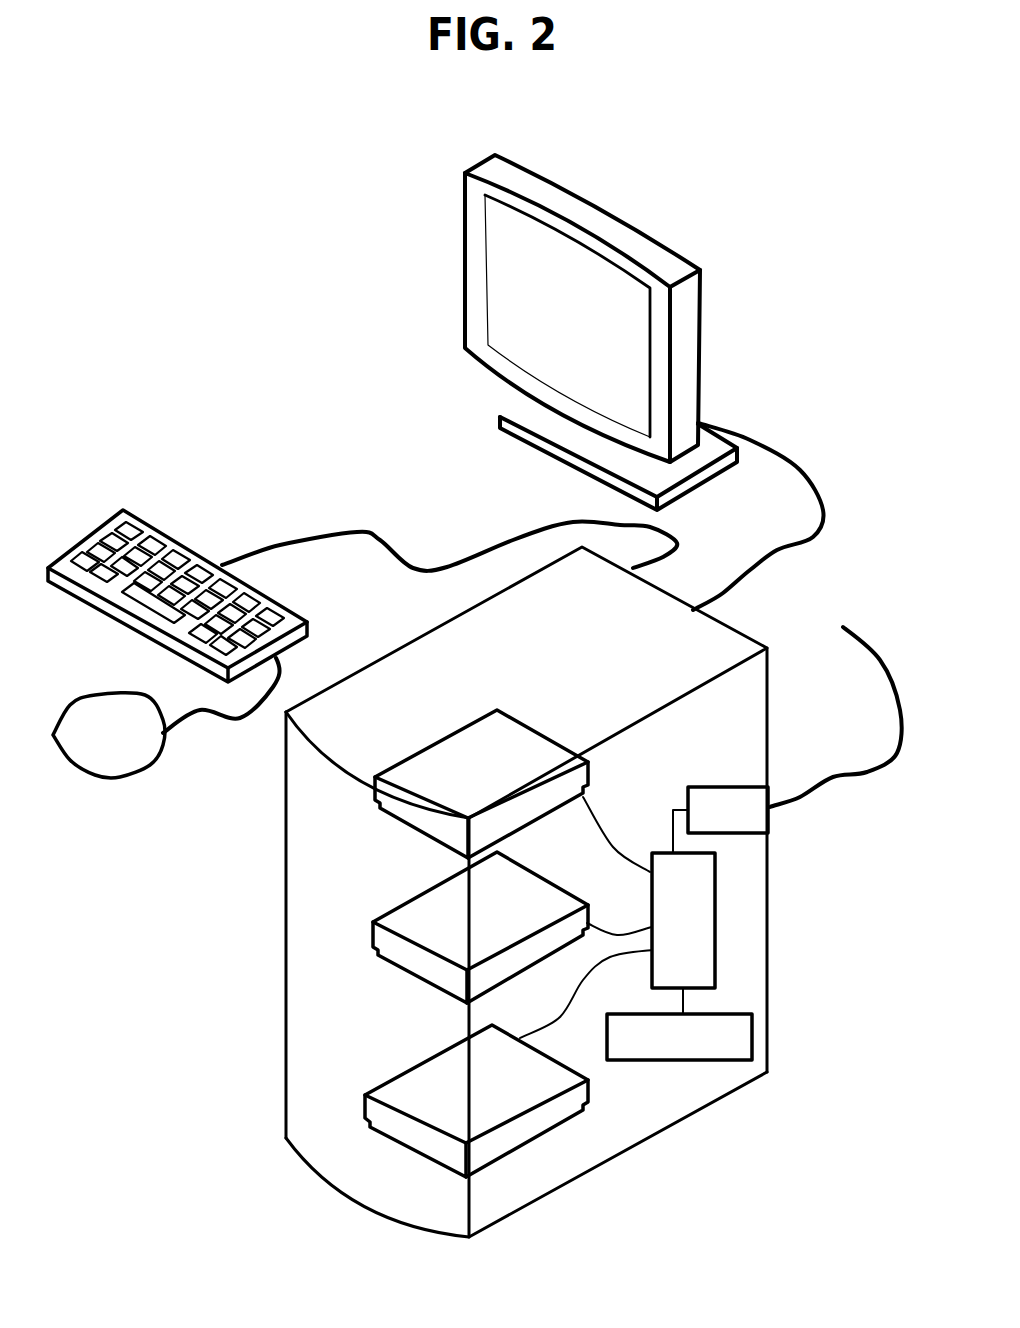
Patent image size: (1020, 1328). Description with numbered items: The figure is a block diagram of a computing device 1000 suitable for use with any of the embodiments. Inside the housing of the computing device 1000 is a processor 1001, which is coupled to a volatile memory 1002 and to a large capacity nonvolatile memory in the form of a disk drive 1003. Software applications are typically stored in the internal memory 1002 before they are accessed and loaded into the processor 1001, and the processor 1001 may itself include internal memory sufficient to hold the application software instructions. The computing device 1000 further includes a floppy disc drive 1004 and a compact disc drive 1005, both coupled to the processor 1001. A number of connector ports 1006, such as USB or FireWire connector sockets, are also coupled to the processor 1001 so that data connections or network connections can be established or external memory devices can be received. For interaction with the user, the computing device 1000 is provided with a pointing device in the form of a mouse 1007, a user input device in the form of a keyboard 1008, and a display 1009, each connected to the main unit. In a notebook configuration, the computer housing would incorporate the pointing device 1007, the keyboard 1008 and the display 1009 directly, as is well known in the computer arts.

The computing device 1000 is at (770, 672).
The processor 1001 is at (658, 932).
The volatile memory 1002 is at (653, 1049).
The disk drive 1003 is at (588, 1093).
The floppy disc drive 1004 is at (590, 783).
The compact disc (CD) drive 1005 is at (538, 965).
The connector ports 1006 is at (703, 821).
The mouse 1007 is at (107, 777).
The keyboard 1008 is at (307, 617).
The display 1009 is at (698, 350).